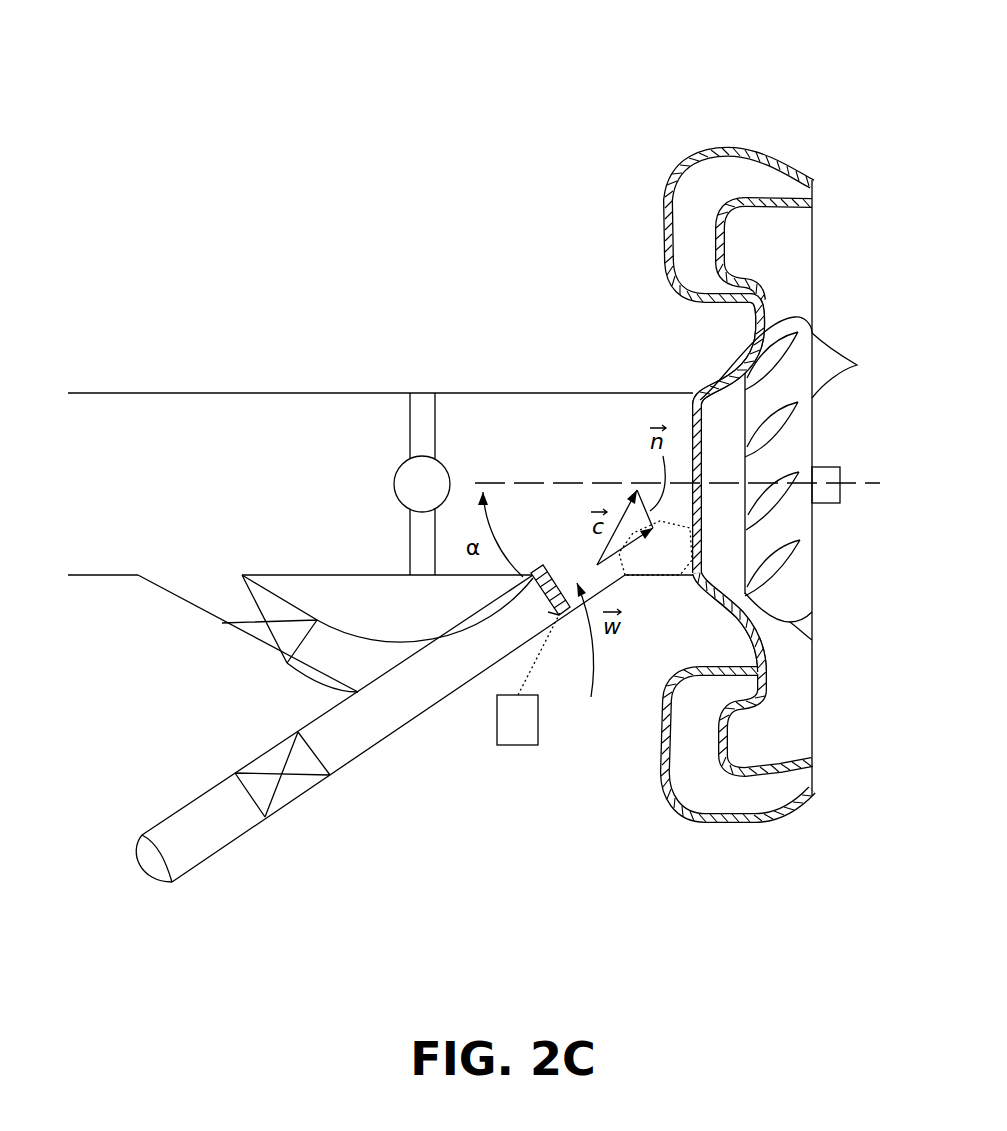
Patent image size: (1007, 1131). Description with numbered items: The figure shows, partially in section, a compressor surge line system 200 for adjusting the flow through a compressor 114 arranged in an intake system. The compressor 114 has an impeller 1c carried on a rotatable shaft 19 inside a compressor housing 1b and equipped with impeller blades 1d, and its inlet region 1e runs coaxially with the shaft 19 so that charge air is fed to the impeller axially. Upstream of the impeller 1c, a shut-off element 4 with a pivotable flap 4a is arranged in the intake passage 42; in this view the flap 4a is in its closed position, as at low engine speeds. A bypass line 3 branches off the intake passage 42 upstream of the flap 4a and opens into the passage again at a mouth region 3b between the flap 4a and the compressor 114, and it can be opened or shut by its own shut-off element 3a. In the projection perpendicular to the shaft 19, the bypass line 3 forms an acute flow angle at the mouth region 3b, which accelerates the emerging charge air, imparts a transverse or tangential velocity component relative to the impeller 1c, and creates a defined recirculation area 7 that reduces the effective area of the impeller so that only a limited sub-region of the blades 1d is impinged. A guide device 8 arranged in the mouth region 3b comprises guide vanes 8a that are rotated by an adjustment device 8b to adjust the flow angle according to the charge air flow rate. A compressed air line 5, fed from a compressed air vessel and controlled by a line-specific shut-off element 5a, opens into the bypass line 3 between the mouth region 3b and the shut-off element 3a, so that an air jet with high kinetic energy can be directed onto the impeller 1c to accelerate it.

The compressor surge line system 200 is at (855, 38).
The compressor 114 is at (620, 222).
The compressor housing 1b is at (700, 813).
The impeller 1c is at (815, 646).
The impeller blades 1d is at (852, 365).
The inlet region 1e is at (665, 372).
The shaft 19 is at (843, 470).
The shut-off element 4 is at (378, 462).
The pivotable flap 4a is at (436, 437).
The intake passage 42 is at (92, 577).
The bypass line 3 is at (180, 605).
The shut-off element 3a is at (268, 660).
The mouth region 3b is at (585, 652).
The compressed air line 5 is at (190, 850).
The line-specific shut-off element 5a is at (303, 797).
The guide device 8 is at (554, 585).
The guide vanes 8a is at (548, 612).
The adjustment device 8b is at (505, 733).
The recirculation area 7 is at (685, 573).